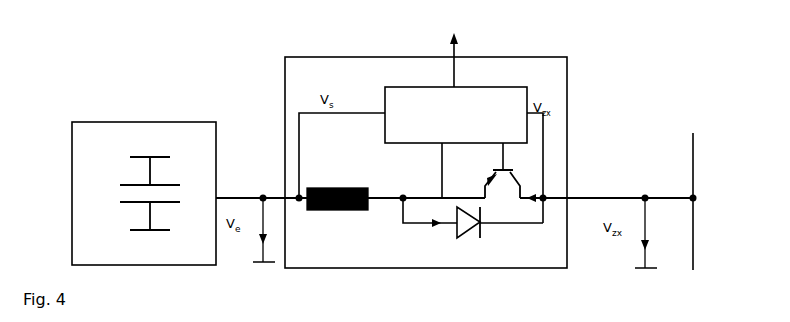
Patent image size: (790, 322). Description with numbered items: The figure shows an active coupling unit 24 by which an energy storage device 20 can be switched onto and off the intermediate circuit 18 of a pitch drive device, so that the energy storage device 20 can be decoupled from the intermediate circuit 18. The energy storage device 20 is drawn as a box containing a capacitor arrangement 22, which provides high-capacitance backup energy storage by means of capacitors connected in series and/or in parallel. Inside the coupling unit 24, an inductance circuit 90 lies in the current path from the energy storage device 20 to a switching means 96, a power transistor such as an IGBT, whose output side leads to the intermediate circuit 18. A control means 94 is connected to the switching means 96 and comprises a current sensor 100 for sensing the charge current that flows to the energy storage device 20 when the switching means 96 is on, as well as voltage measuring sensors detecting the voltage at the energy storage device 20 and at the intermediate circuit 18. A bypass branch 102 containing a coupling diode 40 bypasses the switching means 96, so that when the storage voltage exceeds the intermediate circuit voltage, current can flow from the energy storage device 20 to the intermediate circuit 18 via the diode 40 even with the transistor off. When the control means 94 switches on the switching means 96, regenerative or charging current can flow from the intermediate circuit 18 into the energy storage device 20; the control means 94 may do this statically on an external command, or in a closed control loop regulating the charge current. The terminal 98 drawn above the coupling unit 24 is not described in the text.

The intermediate circuit 18 is at (698, 213).
The energy storage device 20 is at (168, 122).
The capacitor arrangement 22 is at (131, 186).
The coupling unit 24 is at (348, 57).
The coupling diode 40 is at (481, 238).
The inductance circuit 90 is at (332, 211).
The control means 94 is at (421, 155).
The switching means 96 is at (513, 170).
The control input terminal 98 is at (458, 41).
The current sensor 100 is at (440, 201).
The bypass branch 102 is at (518, 224).